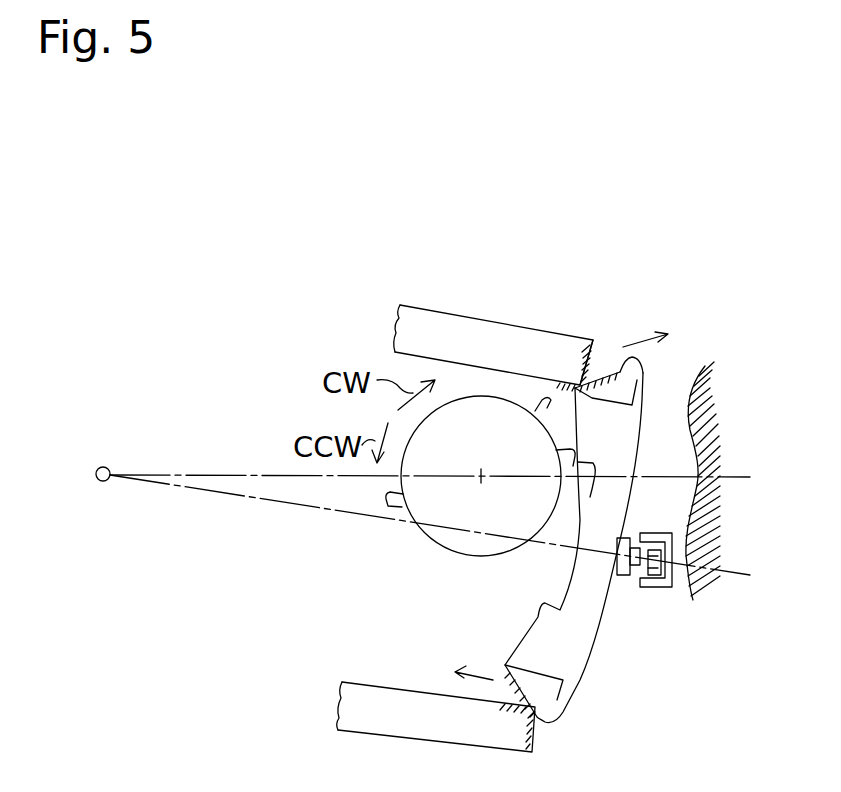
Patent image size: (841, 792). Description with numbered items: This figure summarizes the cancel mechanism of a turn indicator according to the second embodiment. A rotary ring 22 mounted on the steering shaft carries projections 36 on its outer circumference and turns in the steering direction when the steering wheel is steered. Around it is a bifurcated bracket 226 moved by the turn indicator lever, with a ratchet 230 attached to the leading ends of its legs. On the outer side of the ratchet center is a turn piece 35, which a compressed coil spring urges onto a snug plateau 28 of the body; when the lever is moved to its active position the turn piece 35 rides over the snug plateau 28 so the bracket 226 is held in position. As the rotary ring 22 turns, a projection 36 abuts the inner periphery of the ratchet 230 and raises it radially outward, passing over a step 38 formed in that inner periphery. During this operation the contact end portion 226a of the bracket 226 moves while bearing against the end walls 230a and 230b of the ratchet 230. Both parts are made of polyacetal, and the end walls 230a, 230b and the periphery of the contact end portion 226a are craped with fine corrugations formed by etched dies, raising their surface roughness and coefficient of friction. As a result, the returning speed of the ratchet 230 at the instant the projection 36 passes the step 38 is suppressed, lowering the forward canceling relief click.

The rotary ring 22 is at (460, 557).
The snug plateau 28 is at (688, 525).
The turn piece 35 is at (660, 588).
The projection 36 is at (395, 508).
The step 38 is at (575, 467).
The bracket 226 is at (518, 320).
The contact end portion 226a is at (566, 373).
The ratchet 230 is at (580, 673).
The end wall 230a is at (598, 383).
The end wall 230b is at (628, 350).